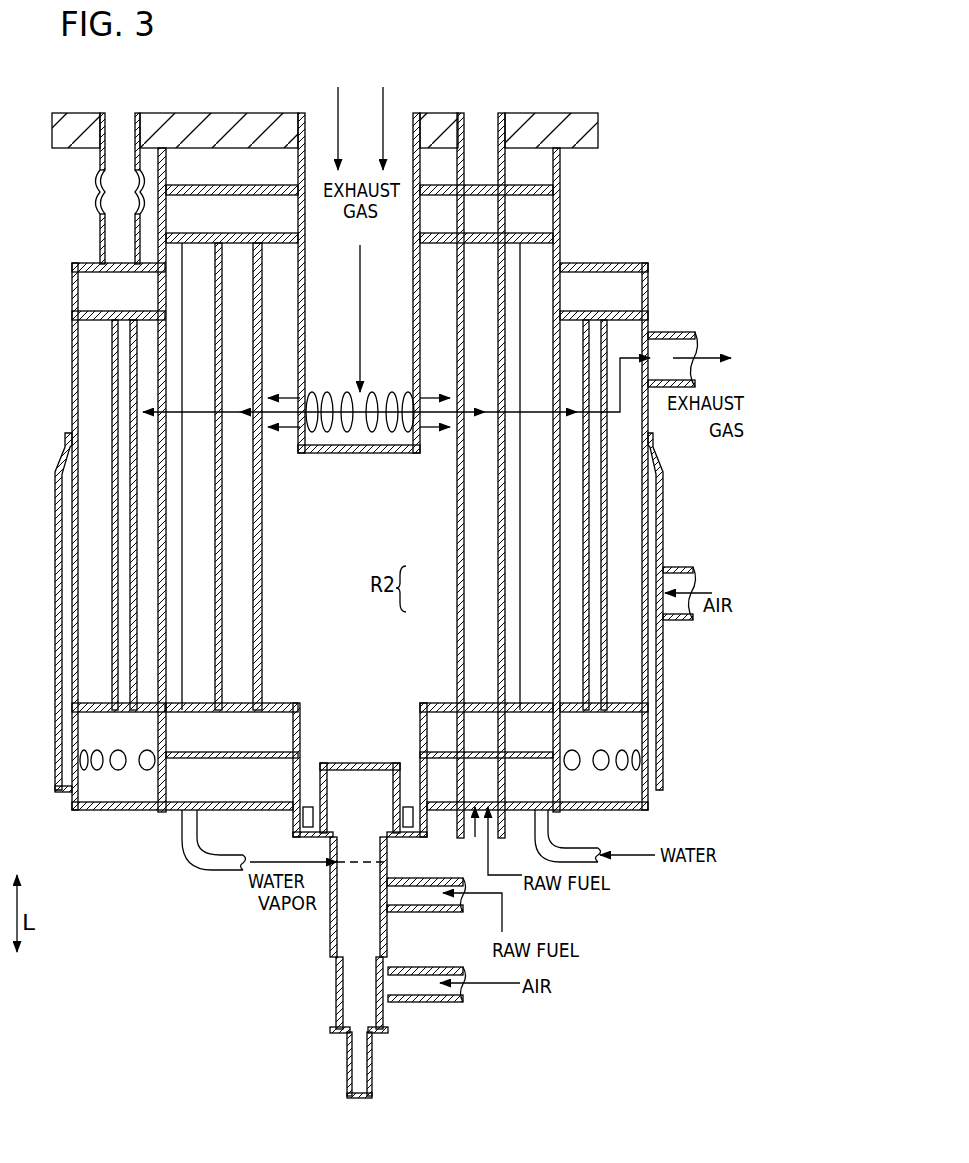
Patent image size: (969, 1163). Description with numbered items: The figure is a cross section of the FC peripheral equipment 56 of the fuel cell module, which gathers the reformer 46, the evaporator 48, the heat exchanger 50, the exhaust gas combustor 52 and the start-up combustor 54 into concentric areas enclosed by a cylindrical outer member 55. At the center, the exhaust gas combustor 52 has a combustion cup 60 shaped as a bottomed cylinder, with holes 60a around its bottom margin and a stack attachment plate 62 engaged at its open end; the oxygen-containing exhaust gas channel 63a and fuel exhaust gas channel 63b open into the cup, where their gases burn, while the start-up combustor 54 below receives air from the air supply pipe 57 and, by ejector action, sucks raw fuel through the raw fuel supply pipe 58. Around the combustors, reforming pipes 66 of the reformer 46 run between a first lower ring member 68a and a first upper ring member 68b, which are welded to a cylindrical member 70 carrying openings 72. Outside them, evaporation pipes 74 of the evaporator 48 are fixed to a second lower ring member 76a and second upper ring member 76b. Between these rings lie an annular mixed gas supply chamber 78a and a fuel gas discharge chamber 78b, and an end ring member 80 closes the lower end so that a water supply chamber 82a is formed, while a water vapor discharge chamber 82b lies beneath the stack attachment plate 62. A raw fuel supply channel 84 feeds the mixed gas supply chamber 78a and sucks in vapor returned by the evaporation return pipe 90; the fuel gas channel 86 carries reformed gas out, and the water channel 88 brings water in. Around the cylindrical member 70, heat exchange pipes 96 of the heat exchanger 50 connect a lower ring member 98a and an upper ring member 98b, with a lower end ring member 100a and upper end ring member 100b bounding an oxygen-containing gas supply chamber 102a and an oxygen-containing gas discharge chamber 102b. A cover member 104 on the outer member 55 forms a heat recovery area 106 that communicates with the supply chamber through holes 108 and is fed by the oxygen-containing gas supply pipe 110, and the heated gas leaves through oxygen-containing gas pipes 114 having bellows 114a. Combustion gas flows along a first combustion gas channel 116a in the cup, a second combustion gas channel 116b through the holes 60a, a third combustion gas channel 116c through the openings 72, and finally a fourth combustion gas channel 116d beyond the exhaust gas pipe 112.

The reformer 46 is at (452, 628).
The evaporator 48 is at (512, 560).
The heat exchanger 50 is at (97, 618).
The exhaust gas combustor 52 is at (318, 128).
The start-up combustor 54 is at (297, 928).
The outer member 55 is at (655, 424).
The FC peripheral equipment 56 is at (630, 56).
The air supply pipe 57 is at (422, 985).
The raw fuel supply pipe 58 is at (400, 908).
The combustion cup 60 is at (310, 262).
The holes 60a is at (355, 392).
The stack attachment plate 62 is at (578, 120).
The oxygen-containing exhaust gas channel 63a is at (338, 102).
The fuel exhaust gas channel 63b is at (383, 102).
The reforming pipes 66 is at (227, 453).
The first lower ring member 68a is at (443, 705).
The first upper ring member 68b is at (545, 233).
The cylindrical member 70 is at (557, 522).
The openings 72 is at (557, 473).
The evaporation pipes 74 is at (532, 652).
The second lower ring member 76a is at (288, 752).
The second upper ring member 76b is at (545, 183).
The mixed gas supply chamber 78a is at (445, 730).
The fuel gas discharge chamber 78b is at (442, 217).
The end ring member 80 is at (270, 812).
The water supply chamber 82a is at (265, 770).
The water vapor discharge chamber 82b is at (523, 148).
The raw fuel supply channel 84 is at (492, 785).
The fuel gas channel 86 is at (488, 123).
The water channel 88 is at (573, 850).
The evaporation return pipe 90 is at (192, 777).
The heat exchange pipes 96 is at (113, 343).
The lower ring member 98a is at (623, 708).
The upper ring member 98b is at (627, 310).
The lower end ring member 100a is at (107, 810).
The upper end ring member 100b is at (628, 265).
The oxygen-containing gas supply chamber 102a is at (140, 790).
The oxygen-containing gas discharge chamber 102b is at (92, 293).
The cover member 104 is at (53, 528).
The heat recovery area 106 is at (68, 551).
The holes 108 is at (84, 765).
The oxygen-containing gas supply pipe 110 is at (672, 567).
The exhaust gas pipe 112 is at (662, 332).
The oxygen-containing gas pipes 114 is at (102, 158).
The bellows 114a is at (98, 195).
The first combustion gas channel 116a is at (360, 318).
The second combustion gas channel 116b is at (432, 397).
The third combustion gas channel 116c is at (613, 415).
The fourth combustion gas channel 116d is at (731, 355).